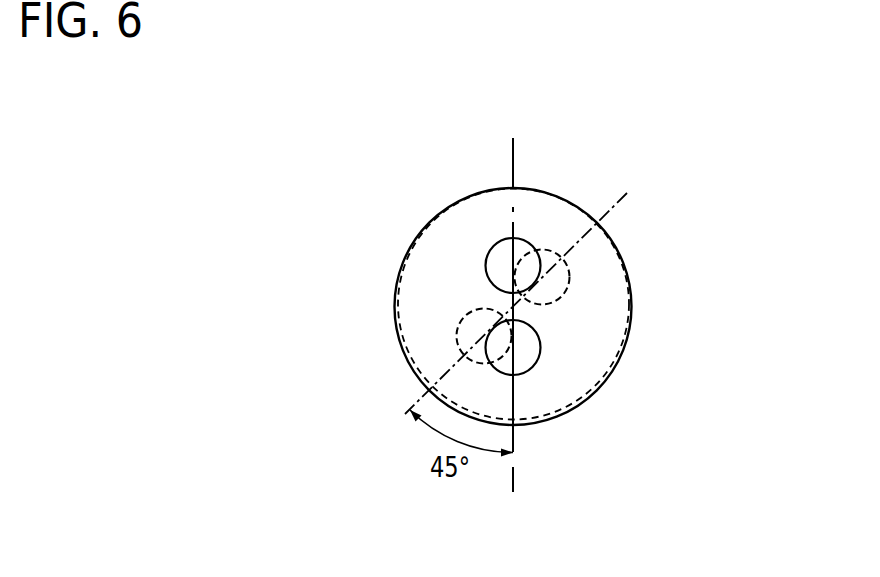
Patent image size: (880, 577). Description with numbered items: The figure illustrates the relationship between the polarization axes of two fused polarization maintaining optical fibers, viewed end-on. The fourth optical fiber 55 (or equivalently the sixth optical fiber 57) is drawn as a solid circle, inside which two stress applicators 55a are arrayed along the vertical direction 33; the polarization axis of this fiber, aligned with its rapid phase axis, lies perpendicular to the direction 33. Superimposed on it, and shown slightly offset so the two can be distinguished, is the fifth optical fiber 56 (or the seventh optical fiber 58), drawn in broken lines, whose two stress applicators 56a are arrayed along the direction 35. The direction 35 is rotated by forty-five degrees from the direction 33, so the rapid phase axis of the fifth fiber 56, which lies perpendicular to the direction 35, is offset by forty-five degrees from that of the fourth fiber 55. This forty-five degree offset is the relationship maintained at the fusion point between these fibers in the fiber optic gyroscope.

The direction in which two stress applicators are arrayed 33 is at (513, 475).
The direction in which two stress applicators are arrayed 35 is at (410, 410).
The fourth optical fiber 55 is at (501, 279).
The sixth optical fiber 57 is at (435, 217).
The stress applicators 55a is at (527, 247).
The fifth optical fiber 56 is at (582, 304).
The seventh optical fiber 58 is at (617, 363).
The stress applicators 56a is at (567, 270).